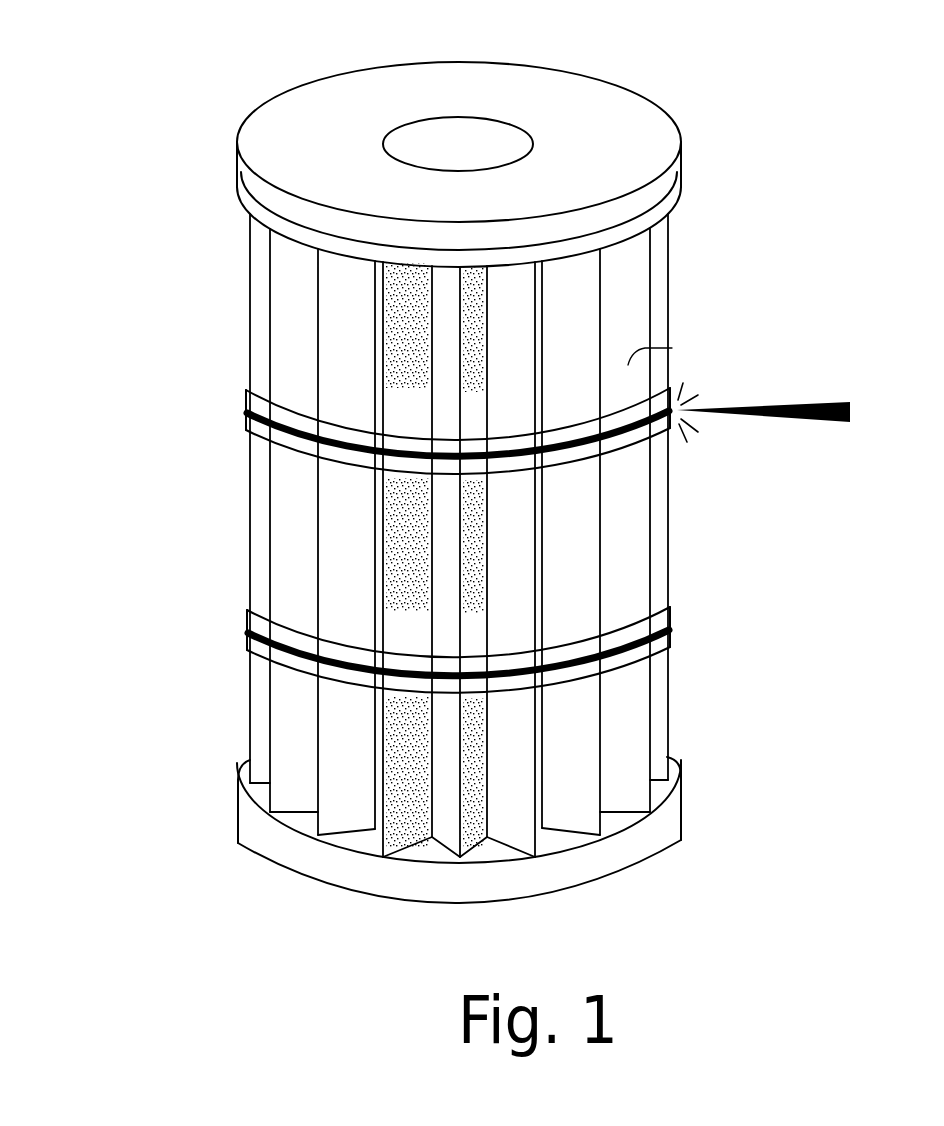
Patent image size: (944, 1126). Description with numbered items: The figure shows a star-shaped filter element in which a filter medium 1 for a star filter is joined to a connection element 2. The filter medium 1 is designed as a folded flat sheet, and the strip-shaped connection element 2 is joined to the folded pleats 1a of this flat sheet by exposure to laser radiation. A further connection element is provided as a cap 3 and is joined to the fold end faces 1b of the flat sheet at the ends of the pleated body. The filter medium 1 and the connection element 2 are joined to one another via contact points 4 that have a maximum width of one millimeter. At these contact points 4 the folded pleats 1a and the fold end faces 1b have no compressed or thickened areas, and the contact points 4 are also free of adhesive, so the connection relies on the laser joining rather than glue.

The filter medium 1 is at (668, 303).
The folded pleats 1a is at (270, 690).
The fold end faces 1b is at (282, 818).
The connection element 2 is at (673, 643).
The cap 3 is at (547, 68).
The contact points 4 is at (673, 607).